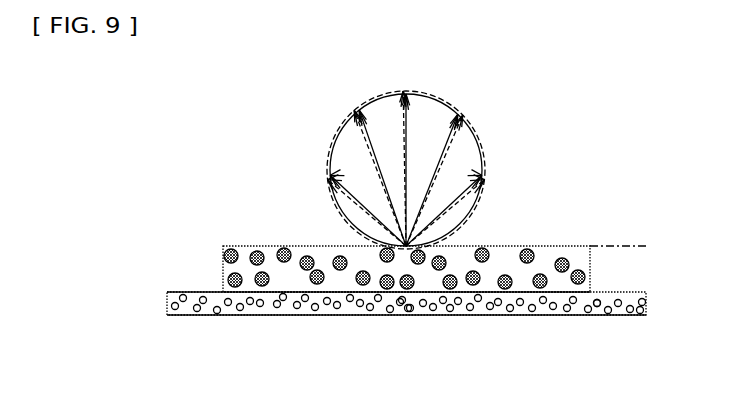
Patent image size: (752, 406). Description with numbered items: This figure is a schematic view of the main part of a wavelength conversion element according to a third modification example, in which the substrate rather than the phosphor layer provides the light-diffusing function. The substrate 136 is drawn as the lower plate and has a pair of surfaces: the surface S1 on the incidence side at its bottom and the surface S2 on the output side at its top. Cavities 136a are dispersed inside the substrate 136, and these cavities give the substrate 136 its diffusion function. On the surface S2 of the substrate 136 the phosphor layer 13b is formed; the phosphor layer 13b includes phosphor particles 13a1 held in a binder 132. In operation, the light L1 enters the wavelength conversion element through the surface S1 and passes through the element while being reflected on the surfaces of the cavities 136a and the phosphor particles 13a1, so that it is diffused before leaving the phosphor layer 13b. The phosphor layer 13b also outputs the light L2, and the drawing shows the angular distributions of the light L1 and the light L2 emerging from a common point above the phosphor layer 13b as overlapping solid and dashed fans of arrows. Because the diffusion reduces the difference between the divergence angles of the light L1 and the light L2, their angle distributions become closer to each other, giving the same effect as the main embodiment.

The phosphor layer 13b is at (657, 246).
The phosphor particles 13a1 is at (483, 262).
The substrate 136 is at (645, 315).
The cavities 136a is at (592, 314).
The binder 132 is at (335, 286).
The surface on an incidence side S1 is at (193, 317).
The surface on an output side S2 is at (188, 288).
The light L1 is at (457, 112).
The light L2 is at (478, 142).